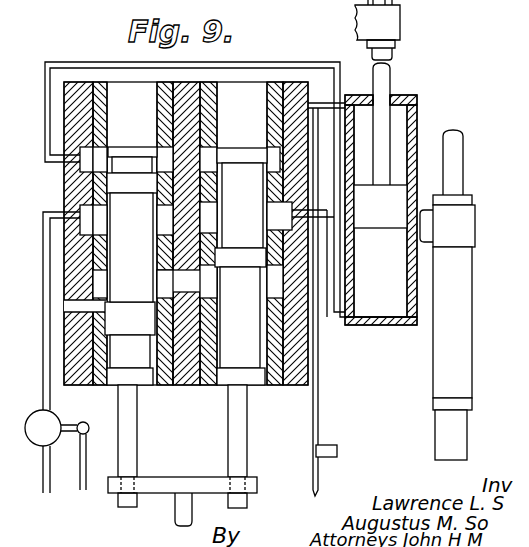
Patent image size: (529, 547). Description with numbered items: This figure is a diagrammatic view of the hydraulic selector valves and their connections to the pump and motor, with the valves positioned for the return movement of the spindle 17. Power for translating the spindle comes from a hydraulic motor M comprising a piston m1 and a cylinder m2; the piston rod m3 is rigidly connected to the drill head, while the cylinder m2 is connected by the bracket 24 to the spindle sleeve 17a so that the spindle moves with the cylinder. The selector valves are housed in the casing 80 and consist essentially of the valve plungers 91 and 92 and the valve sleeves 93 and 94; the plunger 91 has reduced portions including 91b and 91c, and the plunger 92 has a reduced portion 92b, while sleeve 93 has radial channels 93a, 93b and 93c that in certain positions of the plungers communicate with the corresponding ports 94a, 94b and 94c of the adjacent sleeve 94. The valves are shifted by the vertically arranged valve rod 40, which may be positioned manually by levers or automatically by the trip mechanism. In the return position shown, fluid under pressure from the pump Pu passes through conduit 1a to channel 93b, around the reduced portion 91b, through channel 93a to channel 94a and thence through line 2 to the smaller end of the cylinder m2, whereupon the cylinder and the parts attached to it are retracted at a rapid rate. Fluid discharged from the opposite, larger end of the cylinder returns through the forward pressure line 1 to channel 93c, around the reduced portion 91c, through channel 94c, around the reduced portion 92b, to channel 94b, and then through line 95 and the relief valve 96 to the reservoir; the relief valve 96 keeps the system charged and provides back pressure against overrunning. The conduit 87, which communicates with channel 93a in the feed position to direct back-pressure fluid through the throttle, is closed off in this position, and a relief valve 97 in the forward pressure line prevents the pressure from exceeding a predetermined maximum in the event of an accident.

The forward pressure line 1 is at (262, 65).
The conduit 1a is at (43, 268).
The line 2 is at (328, 104).
The spindle 17 is at (470, 423).
The spindle sleeve 17a is at (469, 323).
The bracket 24 is at (476, 230).
The valve rod 40 is at (176, 511).
The casing 80 is at (64, 188).
The conduit 87 is at (95, 313).
The valve plunger 91 is at (137, 452).
The reduced portion 91b is at (131, 247).
The reduced portion 91c is at (135, 170).
The valve plunger 92 is at (248, 452).
The reduced portion 92b is at (272, 206).
The valve sleeve 93 is at (158, 386).
The channel 93a is at (163, 290).
The channel 93b is at (98, 206).
The channel 93c is at (106, 150).
The valve sleeve 94 is at (208, 386).
The channel 94a is at (272, 290).
The channel 94b is at (267, 218).
The channel 94c is at (207, 172).
The conduit 95 is at (322, 374).
The pressure relief valve 96 is at (338, 451).
The relief valve 97 is at (101, 406).
The pump Pu is at (43, 428).
The hydraulic motor M is at (381, 210).
The piston m1 is at (380, 206).
The cylinder m2 is at (383, 322).
The piston rod m3 is at (391, 80).